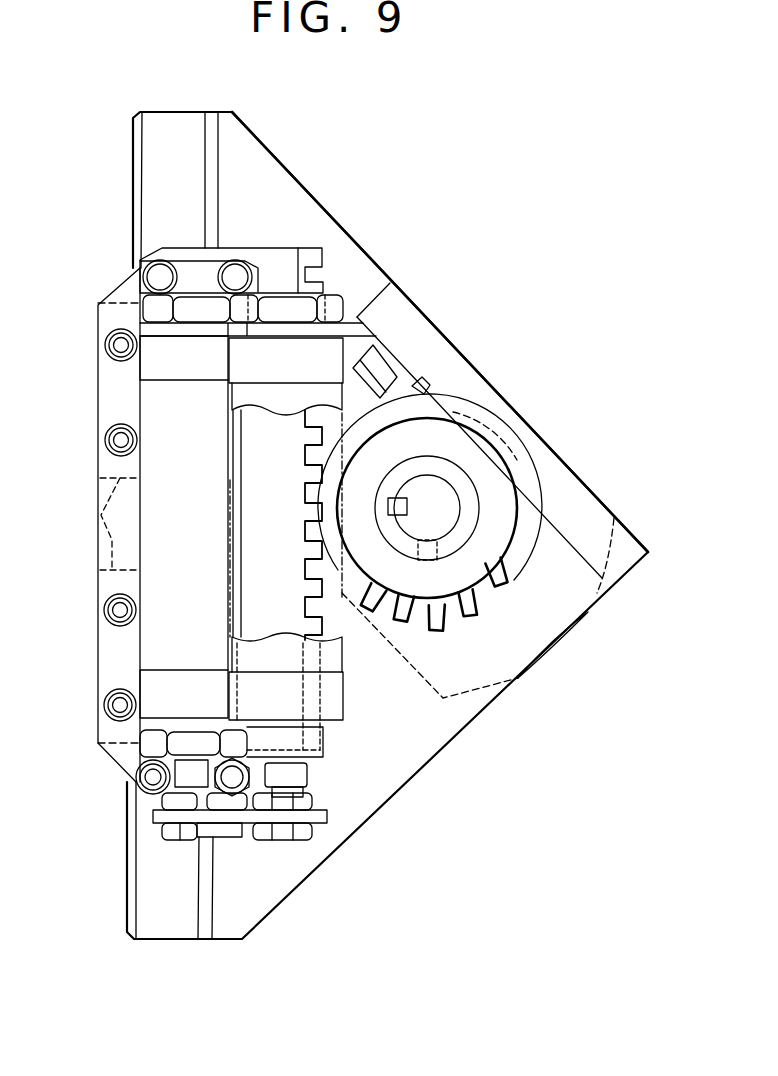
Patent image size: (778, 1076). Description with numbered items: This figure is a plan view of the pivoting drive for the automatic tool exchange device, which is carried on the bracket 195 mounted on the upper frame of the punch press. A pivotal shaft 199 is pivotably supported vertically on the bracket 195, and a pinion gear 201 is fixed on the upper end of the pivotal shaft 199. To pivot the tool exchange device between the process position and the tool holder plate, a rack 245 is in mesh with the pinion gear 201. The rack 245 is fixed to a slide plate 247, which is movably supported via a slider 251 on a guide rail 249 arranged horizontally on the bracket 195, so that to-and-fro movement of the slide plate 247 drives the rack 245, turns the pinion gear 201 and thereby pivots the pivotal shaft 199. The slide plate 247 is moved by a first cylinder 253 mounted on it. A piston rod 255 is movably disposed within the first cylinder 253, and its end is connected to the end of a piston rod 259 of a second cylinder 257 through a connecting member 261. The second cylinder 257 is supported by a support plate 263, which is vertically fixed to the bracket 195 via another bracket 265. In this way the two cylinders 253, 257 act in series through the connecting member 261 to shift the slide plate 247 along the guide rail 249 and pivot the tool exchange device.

The bracket 195 is at (452, 736).
The pivotal shaft 199 is at (450, 495).
The pinion gear 201 is at (492, 582).
The rack 245 is at (343, 623).
The slide plate 247 is at (107, 725).
The guide rail 249 is at (178, 930).
The slider 251 is at (98, 518).
The first cylinder 253 is at (150, 407).
The piston rod 255 is at (173, 768).
The second cylinder 257 is at (345, 703).
The piston rod 259 is at (307, 773).
The connecting member 261 is at (153, 818).
The support plate 263 is at (470, 368).
The bracket 265 is at (370, 330).